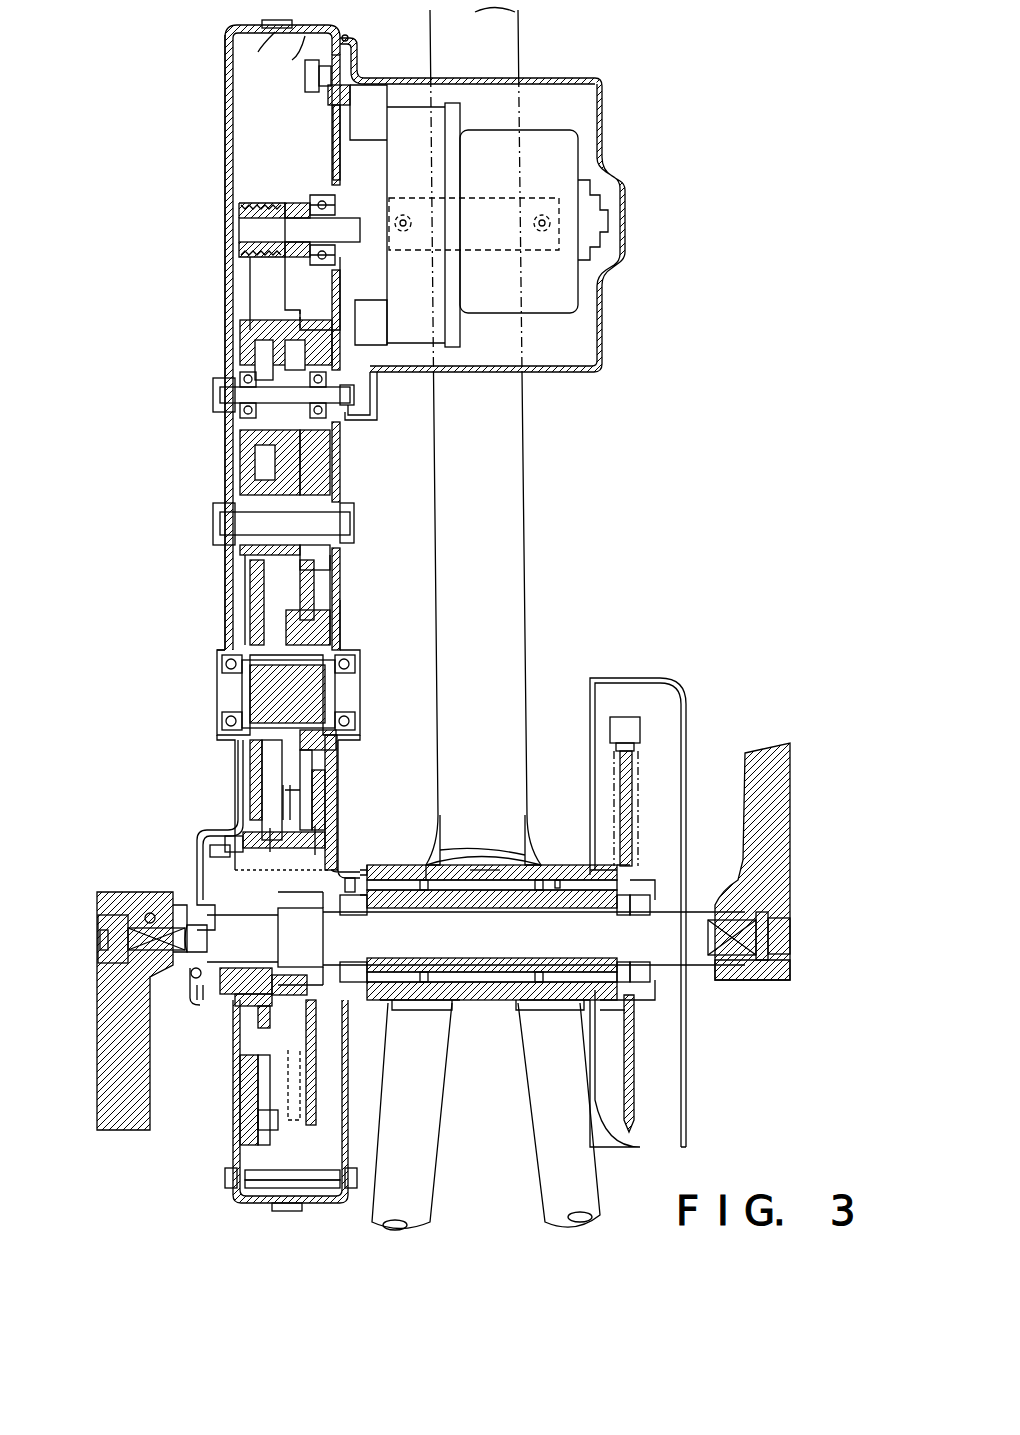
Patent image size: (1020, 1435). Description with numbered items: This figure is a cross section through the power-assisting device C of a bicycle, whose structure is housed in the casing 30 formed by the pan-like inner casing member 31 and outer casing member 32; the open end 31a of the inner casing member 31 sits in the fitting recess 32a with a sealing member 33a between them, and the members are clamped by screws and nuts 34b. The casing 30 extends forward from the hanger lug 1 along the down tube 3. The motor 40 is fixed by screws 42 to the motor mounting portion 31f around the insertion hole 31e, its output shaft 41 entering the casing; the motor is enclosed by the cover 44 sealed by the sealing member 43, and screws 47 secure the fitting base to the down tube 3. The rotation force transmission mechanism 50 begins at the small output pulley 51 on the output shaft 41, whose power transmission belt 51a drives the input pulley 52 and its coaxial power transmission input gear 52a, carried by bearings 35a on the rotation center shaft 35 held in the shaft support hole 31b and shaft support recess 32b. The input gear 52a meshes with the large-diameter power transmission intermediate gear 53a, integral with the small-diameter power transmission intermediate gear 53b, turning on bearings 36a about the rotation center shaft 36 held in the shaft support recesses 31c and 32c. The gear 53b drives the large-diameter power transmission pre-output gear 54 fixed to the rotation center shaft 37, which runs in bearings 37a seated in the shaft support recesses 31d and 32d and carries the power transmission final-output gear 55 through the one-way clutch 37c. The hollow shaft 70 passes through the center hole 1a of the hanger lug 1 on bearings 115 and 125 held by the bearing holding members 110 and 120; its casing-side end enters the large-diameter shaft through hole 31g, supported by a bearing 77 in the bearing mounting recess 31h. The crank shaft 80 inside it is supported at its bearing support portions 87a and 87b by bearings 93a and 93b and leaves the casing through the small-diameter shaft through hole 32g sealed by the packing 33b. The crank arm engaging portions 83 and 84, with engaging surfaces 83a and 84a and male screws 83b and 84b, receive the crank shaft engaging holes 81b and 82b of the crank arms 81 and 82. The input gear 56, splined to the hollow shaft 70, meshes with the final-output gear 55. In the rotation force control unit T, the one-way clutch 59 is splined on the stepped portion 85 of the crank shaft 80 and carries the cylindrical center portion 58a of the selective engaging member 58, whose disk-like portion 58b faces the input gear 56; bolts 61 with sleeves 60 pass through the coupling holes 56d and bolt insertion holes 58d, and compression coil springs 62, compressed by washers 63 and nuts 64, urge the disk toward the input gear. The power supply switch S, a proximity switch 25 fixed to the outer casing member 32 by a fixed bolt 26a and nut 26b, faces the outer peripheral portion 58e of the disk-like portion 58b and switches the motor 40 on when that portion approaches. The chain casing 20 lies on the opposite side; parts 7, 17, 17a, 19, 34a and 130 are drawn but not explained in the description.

The hanger lug 1 is at (505, 870).
The center hole 1a is at (488, 1000).
The down tube 3 is at (530, 635).
The spokes 7 is at (432, 1175).
The bolt 17 is at (633, 770).
The bolt 17a is at (648, 1005).
The nut 19 is at (618, 722).
The chain casing 20 is at (688, 715).
The proximity switch 25 is at (250, 1095).
The fixed bolt 26a is at (245, 1128).
The nut 26b is at (291, 1170).
The power-assisting device casing 30 is at (213, 145).
The inner casing member 31 is at (305, 30).
The open end 31a is at (298, 49).
The shaft support hole 31b is at (355, 383).
The shaft support recess 31c is at (342, 500).
The shaft support recess 31d is at (355, 652).
The insertion hole 31e is at (330, 132).
The motor mounting portion 31f is at (322, 100).
The large-diameter shaft through hole 31g is at (362, 880).
The bearing mounting recess 31h is at (332, 855).
The outer casing member 32 is at (225, 62).
The fitting recess 32a is at (282, 50).
The shaft support recess 32b is at (220, 412).
The shaft support recess 32c is at (220, 535).
The shaft support recess 32d is at (222, 652).
The small-diameter shaft through hole 32g is at (207, 982).
The sealing member 33a is at (256, 56).
The packing 33b is at (207, 900).
The lower cover 34a is at (240, 1190).
The nuts 34b is at (352, 1160).
The rotation center shaft 35 is at (225, 395).
The bearings 35a is at (242, 382).
The rotation center shaft 36 is at (225, 522).
The bearings 36a is at (330, 542).
The rotation center shaft 37 is at (225, 700).
The bearing 37a is at (222, 668).
The one-way clutch 37c is at (335, 728).
The motor 40 is at (535, 130).
The output shaft 41 is at (238, 230).
The screws 42 is at (310, 82).
The sealing member 43 is at (358, 55).
The cover 44 is at (575, 77).
The screws 47 is at (403, 212).
The rotation force transmission mechanism 50 is at (242, 585).
The output pulley 51 is at (261, 206).
The power transmission belt 51a is at (285, 210).
The input pulley 52 is at (240, 335).
The power transmission input gear 52a is at (303, 307).
The large-diameter power transmission intermediate gear 53a is at (338, 470).
The small-diameter power transmission intermediate gear 53b is at (240, 490).
The large-diameter power transmission pre-output gear 54 is at (255, 612).
The power transmission final-output gear 55 is at (335, 742).
The input gear 56 is at (320, 775).
The coupling holes 56d is at (318, 795).
The selective engaging member 58 is at (272, 1000).
The cylindrical center portion 58a is at (232, 1045).
The disk-like portion 58b is at (260, 1030).
The bolt insertion holes 58d is at (293, 790).
The outer peripheral portion 58e is at (310, 1113).
The one-way clutch 59 is at (215, 1020).
The sleeve 60 is at (260, 830).
The bolt 61 is at (295, 835).
The compression coil spring 62 is at (250, 840).
The washer 63 is at (235, 840).
The nut 64 is at (215, 832).
The hollow shaft 70 is at (480, 878).
The bearing 77 is at (322, 1018).
The crank shaft 80 is at (492, 937).
The crank arm 81 is at (110, 1022).
The crank shaft engaging hole 81b is at (148, 910).
The crank arm 82 is at (788, 790).
The crank shaft engaging hole 82b is at (726, 985).
The crank arm engaging portion 83 is at (100, 930).
The engaging surface 83a is at (112, 950).
The male screw 83b is at (105, 945).
The crank arm engaging portion 84 is at (760, 978).
The engaging surface 84a is at (775, 915).
The male screw 84b is at (792, 930).
The stepped portion 85 is at (442, 938).
The bearing support portion 87a is at (340, 935).
The bearing support portion 87b is at (628, 935).
The bearing 93a is at (305, 912).
The bearing 93b is at (662, 900).
The bearing holding member 110 is at (385, 872).
The bearing 115 is at (410, 890).
The bearing holding member 120 is at (564, 868).
The bearing 125 is at (570, 892).
The hub flange 130 is at (448, 870).
The power-assisting device C is at (202, 455).
The power supply switch S is at (243, 1085).
The rotation force control unit T is at (210, 856).